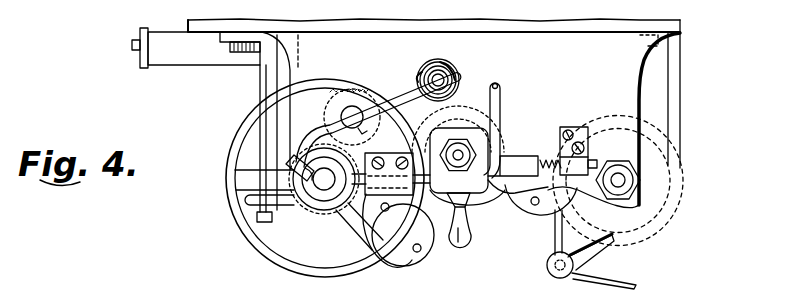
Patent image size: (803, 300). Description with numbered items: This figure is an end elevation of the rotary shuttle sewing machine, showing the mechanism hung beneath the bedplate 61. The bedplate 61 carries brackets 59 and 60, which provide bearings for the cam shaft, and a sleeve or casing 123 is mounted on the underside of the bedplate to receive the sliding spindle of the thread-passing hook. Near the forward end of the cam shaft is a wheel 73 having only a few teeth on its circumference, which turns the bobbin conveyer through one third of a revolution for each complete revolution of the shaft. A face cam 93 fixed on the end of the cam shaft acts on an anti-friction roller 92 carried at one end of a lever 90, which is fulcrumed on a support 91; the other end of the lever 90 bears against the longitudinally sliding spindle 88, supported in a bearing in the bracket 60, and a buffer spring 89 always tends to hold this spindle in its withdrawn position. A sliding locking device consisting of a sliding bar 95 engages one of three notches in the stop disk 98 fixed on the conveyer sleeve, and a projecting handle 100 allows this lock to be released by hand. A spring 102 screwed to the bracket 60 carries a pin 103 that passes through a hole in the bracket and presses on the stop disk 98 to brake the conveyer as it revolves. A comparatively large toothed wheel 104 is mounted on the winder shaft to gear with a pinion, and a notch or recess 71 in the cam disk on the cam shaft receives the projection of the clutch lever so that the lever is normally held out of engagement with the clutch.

The bracket 60 is at (611, 33).
The bedplate 61 is at (353, 23).
The sleeve or casing 123 is at (196, 48).
The wheel 73 is at (352, 227).
The face cam 93 is at (306, 193).
The anti-friction roller 92 is at (298, 167).
The lever 90 is at (392, 100).
The support 91 is at (345, 108).
The longitudinally sliding spindle 88 is at (452, 68).
The buffer spring 89 is at (456, 82).
The spring 102 is at (501, 104).
The sliding bar 95 is at (509, 205).
The notch or recess 71 is at (533, 205).
The bracket 59 is at (552, 170).
The pin 103 is at (549, 177).
The stop disk 98 is at (467, 220).
The projecting handle 100 is at (461, 238).
The toothed wheel 104 is at (615, 202).